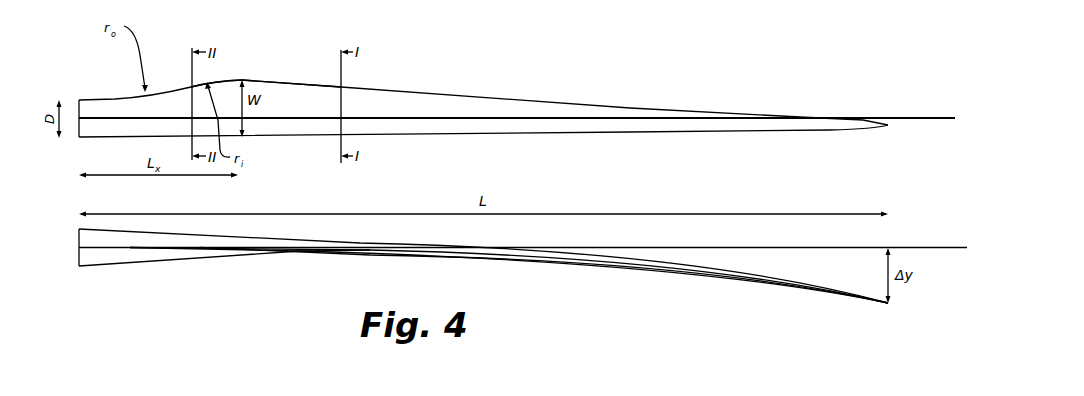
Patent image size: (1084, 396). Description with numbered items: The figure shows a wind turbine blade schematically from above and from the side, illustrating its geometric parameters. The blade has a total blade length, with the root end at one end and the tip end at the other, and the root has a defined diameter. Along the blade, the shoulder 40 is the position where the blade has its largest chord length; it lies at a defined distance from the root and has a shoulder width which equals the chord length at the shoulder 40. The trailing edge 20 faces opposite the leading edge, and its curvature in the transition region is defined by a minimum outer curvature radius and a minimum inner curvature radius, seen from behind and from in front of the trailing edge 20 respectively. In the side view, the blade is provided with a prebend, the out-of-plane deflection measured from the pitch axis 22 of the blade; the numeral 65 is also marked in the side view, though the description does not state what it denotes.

The trailing edge 20 is at (366, 251).
The pitch axis 22 is at (400, 88).
The shoulder 40 is at (242, 80).
The transition region 65 is at (230, 255).